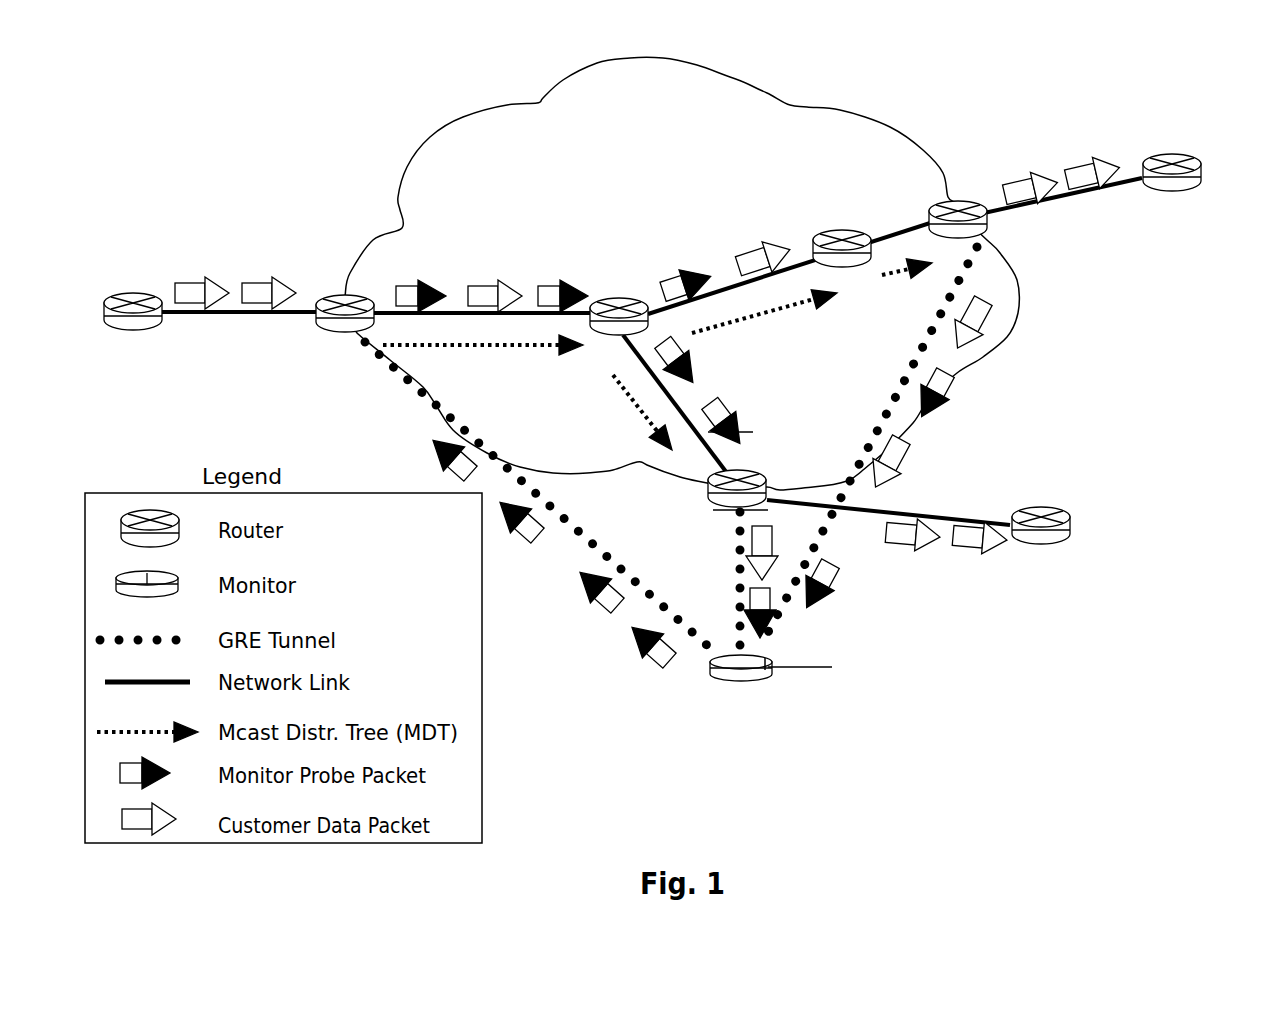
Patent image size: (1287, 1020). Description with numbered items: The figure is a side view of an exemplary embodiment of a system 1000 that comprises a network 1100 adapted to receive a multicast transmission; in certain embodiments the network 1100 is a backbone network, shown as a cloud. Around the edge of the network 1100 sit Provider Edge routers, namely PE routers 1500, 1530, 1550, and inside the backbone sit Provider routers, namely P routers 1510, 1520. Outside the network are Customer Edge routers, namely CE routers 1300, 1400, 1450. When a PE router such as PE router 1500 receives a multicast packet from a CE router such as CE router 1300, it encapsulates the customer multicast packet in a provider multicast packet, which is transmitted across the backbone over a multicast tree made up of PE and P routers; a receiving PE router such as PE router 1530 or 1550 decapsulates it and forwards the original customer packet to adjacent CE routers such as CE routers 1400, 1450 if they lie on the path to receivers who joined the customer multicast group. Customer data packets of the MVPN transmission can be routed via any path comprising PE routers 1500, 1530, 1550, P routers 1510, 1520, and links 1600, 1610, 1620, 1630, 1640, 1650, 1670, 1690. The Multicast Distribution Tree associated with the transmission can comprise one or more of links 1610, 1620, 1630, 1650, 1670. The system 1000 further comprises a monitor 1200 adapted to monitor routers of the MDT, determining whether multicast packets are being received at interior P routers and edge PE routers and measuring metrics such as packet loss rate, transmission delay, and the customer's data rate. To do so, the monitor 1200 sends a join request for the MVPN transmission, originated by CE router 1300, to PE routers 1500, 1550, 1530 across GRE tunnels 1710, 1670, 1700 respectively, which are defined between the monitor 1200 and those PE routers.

The system 1000 is at (320, 114).
The network 1100 is at (682, 273).
The monitor 1200 is at (771, 687).
The CE router 1300 is at (133, 331).
The CE router 1400 is at (1201, 177).
The CE router 1450 is at (1070, 525).
The PE router 1500 is at (333, 332).
The P router 1510 is at (619, 304).
The P router 1520 is at (837, 237).
The PE router 1530 is at (940, 212).
The PE router 1550 is at (756, 481).
The link 1600 is at (239, 328).
The link 1610 is at (483, 337).
The link 1620 is at (764, 309).
The link 1630 is at (906, 259).
The link 1640 is at (1058, 202).
The link 1650 is at (644, 412).
The GRE tunnel 1670 is at (711, 580).
The link 1690 is at (888, 507).
The GRE tunnel 1700 is at (868, 447).
The GRE tunnel 1710 is at (541, 498).